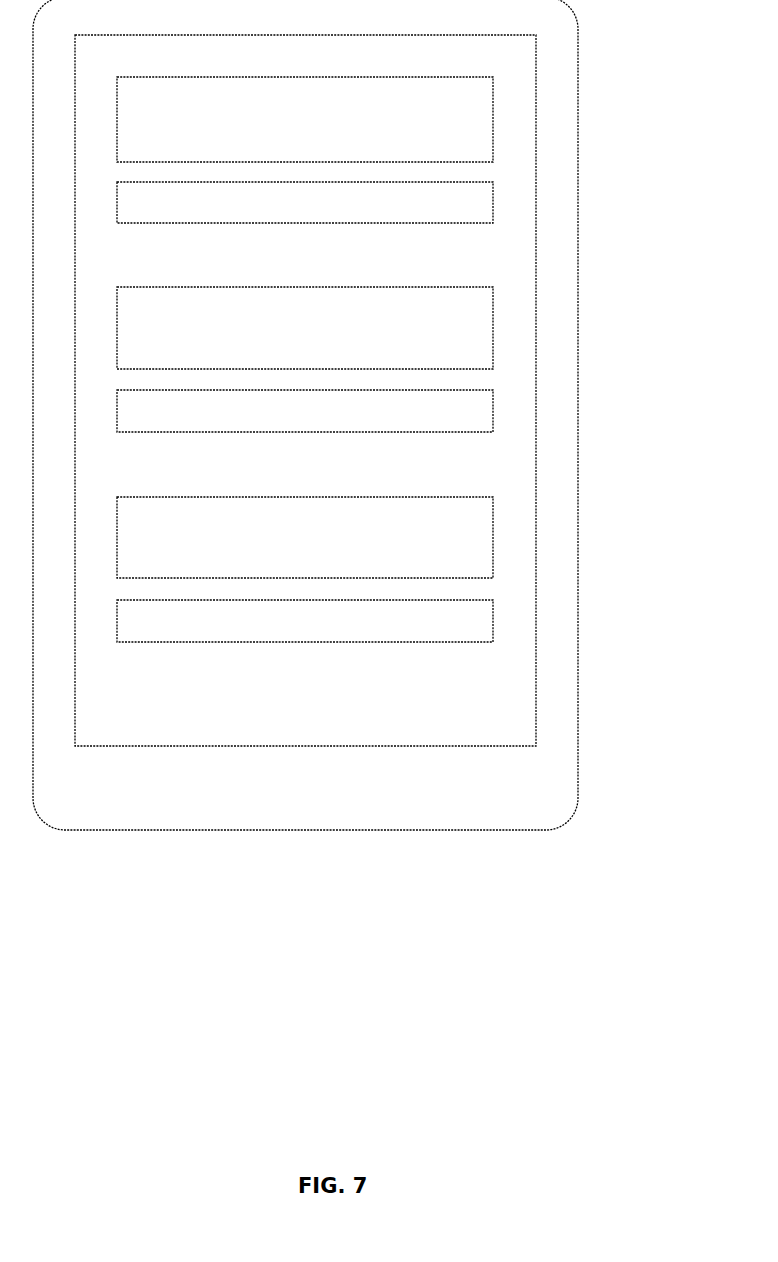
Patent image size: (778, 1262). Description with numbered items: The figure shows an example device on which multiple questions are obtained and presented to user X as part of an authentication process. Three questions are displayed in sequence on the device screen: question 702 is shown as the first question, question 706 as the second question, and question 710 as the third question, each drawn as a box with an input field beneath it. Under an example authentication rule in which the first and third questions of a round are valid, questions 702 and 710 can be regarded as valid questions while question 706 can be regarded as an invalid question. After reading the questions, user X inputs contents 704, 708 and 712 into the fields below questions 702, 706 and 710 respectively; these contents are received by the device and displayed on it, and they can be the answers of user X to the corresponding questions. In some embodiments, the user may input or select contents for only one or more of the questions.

The question 702 is at (494, 120).
The content 704 is at (494, 202).
The question 706 is at (494, 330).
The content 708 is at (494, 412).
The question 710 is at (494, 538).
The content 712 is at (494, 620).